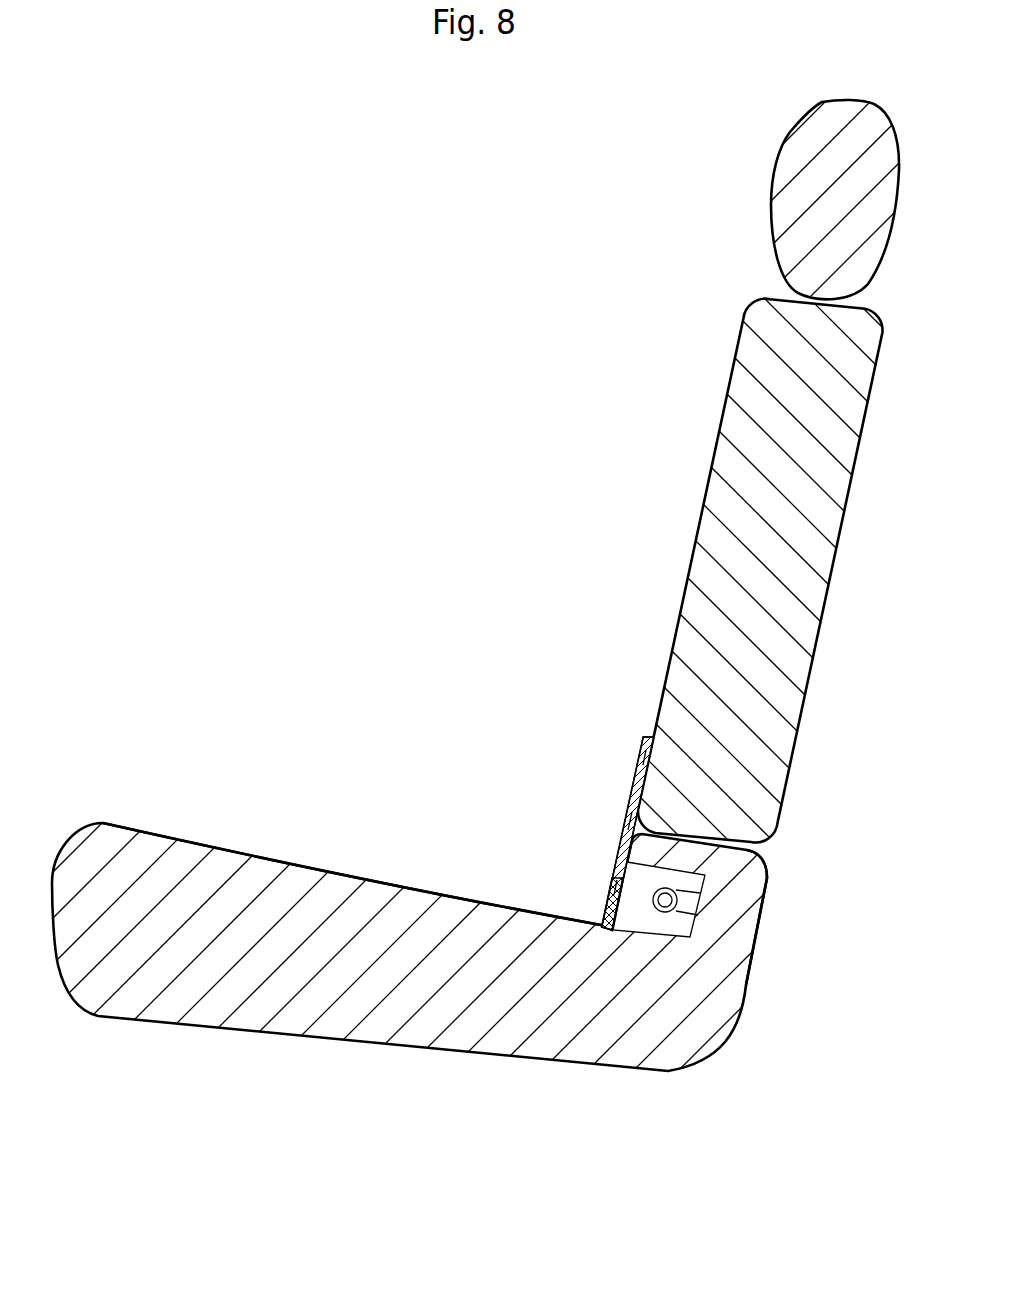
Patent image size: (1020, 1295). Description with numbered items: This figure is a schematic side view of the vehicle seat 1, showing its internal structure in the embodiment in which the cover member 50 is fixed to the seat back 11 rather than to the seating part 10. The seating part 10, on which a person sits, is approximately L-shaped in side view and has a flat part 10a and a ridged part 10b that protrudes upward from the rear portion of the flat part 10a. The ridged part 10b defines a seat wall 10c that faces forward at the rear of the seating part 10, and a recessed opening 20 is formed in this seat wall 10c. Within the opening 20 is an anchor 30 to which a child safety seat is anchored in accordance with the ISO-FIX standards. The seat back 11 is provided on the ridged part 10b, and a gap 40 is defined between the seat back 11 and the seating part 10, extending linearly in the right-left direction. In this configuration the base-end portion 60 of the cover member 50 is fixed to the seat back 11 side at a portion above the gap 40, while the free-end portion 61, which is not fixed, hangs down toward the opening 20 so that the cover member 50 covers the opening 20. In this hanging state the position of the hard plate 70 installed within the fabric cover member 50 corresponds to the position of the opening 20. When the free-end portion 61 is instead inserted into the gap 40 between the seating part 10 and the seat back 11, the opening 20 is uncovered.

The vehicle seat 1 is at (490, 291).
The seating part 10 is at (672, 1074).
The flat part 10a is at (233, 848).
The ridged part 10b is at (767, 873).
The seat wall 10c is at (617, 853).
The seat back 11 is at (743, 312).
The opening 20 is at (637, 917).
The anchor 30 is at (680, 908).
The gap 40 is at (623, 820).
The cover member 50 is at (642, 755).
The base-end portion 60 is at (647, 734).
The free-end portion 61 is at (588, 917).
The hard plate 70 is at (608, 887).